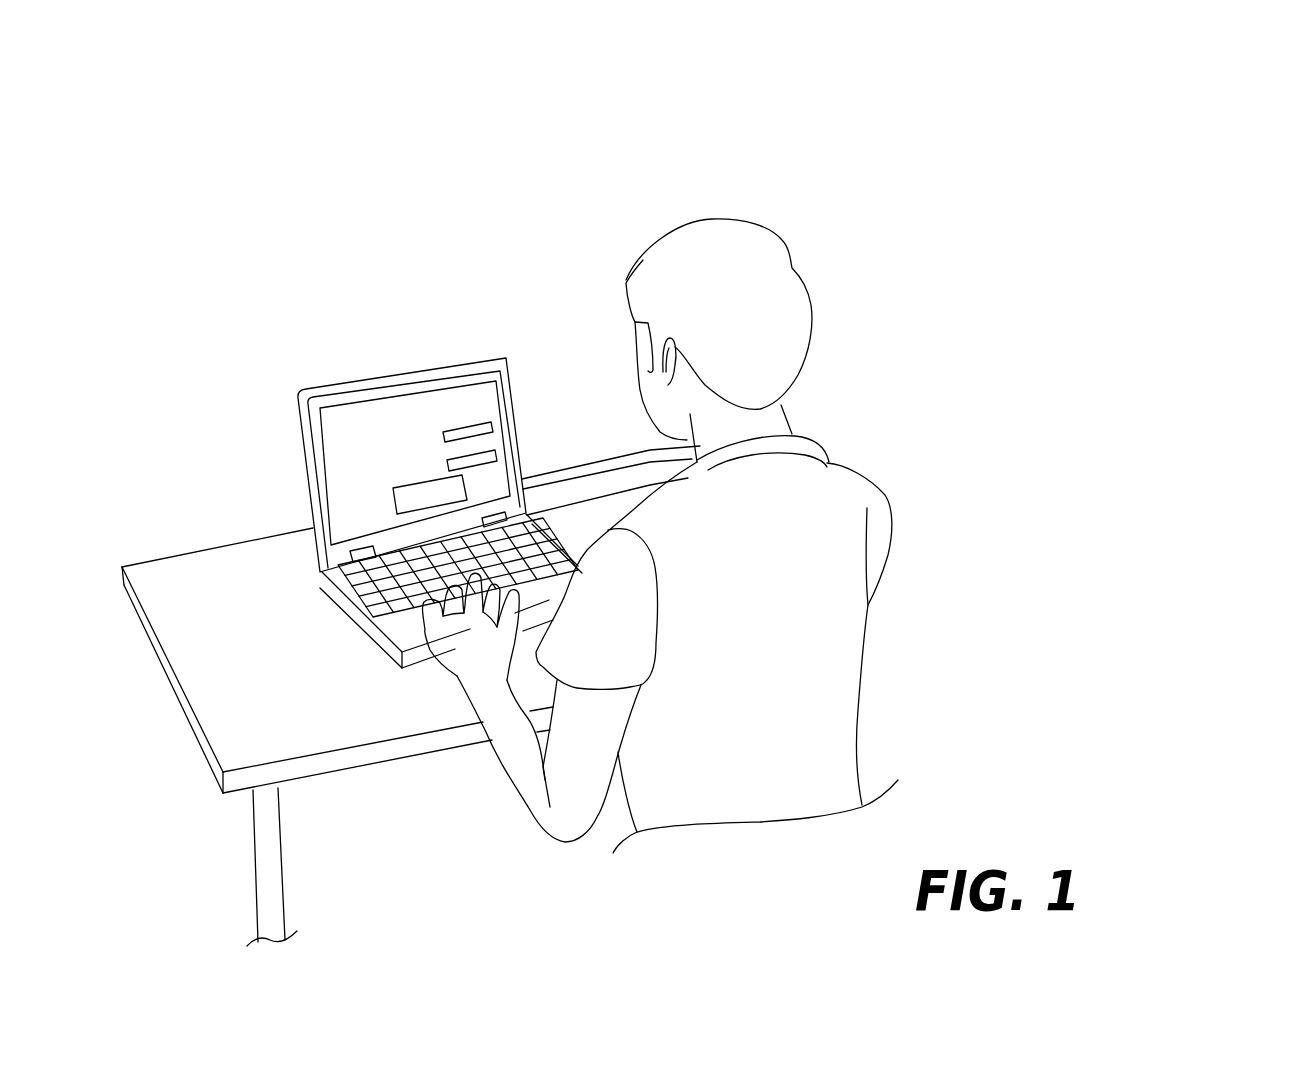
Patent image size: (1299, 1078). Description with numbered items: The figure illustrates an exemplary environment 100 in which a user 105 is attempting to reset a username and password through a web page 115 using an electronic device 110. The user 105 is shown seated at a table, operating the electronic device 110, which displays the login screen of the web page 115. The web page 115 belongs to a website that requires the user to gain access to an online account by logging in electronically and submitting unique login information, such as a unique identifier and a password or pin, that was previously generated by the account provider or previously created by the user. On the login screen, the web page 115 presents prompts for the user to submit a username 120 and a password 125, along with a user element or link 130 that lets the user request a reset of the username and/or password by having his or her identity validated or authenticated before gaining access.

The environment 100 is at (1190, 141).
The user 105 is at (785, 240).
The electronic device 110 is at (568, 552).
The web page 115 is at (330, 420).
The username 120 is at (489, 428).
The password 125 is at (496, 451).
The user element or link 130 is at (468, 495).